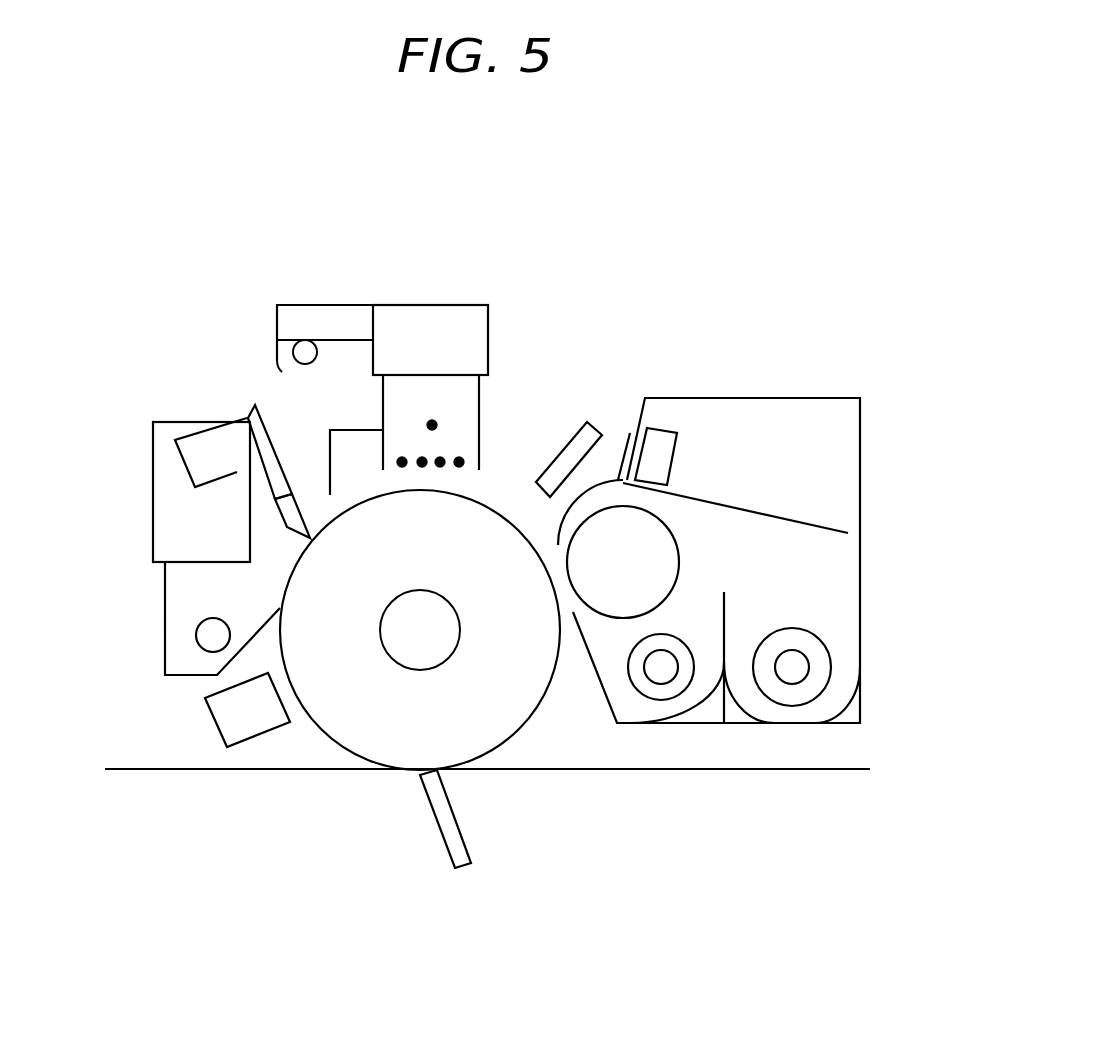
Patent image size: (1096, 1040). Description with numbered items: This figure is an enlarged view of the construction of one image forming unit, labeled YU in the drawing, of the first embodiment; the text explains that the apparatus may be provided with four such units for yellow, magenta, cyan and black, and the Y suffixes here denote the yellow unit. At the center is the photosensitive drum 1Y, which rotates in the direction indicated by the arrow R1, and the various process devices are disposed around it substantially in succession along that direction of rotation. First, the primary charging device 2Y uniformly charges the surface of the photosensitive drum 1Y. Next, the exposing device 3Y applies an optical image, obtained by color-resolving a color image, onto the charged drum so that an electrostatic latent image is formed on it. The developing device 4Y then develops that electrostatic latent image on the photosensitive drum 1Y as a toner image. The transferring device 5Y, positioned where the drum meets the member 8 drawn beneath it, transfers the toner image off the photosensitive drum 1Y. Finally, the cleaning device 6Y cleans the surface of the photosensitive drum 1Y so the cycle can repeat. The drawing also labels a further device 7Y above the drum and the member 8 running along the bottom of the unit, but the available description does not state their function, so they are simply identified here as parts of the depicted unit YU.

The photosensitive drum 1Y is at (490, 727).
The primary charging device 2Y is at (468, 398).
The exposing device 3Y is at (598, 430).
The developing device 4Y is at (808, 415).
The transferring device 5Y is at (460, 863).
The cleaning device 6Y is at (150, 467).
The discharging device 7Y is at (312, 305).
The image forming unit YU is at (460, 290).
The intermediate transfer belt 8 is at (822, 769).
The rotation direction of photoconductor R1 is at (503, 538).